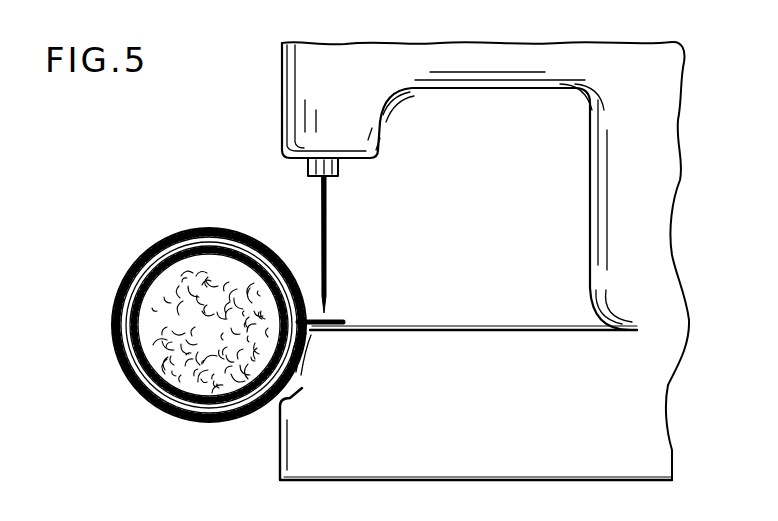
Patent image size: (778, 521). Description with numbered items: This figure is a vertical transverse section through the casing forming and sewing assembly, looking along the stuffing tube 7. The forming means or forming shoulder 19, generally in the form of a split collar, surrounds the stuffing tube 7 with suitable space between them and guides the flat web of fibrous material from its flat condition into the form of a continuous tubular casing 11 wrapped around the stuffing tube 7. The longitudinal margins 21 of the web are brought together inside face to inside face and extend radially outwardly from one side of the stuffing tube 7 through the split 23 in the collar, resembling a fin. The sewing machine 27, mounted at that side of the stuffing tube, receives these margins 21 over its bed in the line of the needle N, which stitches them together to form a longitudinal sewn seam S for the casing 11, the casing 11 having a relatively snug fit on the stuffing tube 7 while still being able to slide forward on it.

The sewing machine 27 is at (505, 58).
The needle N is at (330, 224).
The longitudinal margins 21 is at (344, 321).
The split 23 is at (312, 334).
The sewn tubular article S is at (179, 334).
The forming means 19 is at (120, 366).
The casing 11 is at (132, 328).
The stuffing tube 7 is at (148, 296).